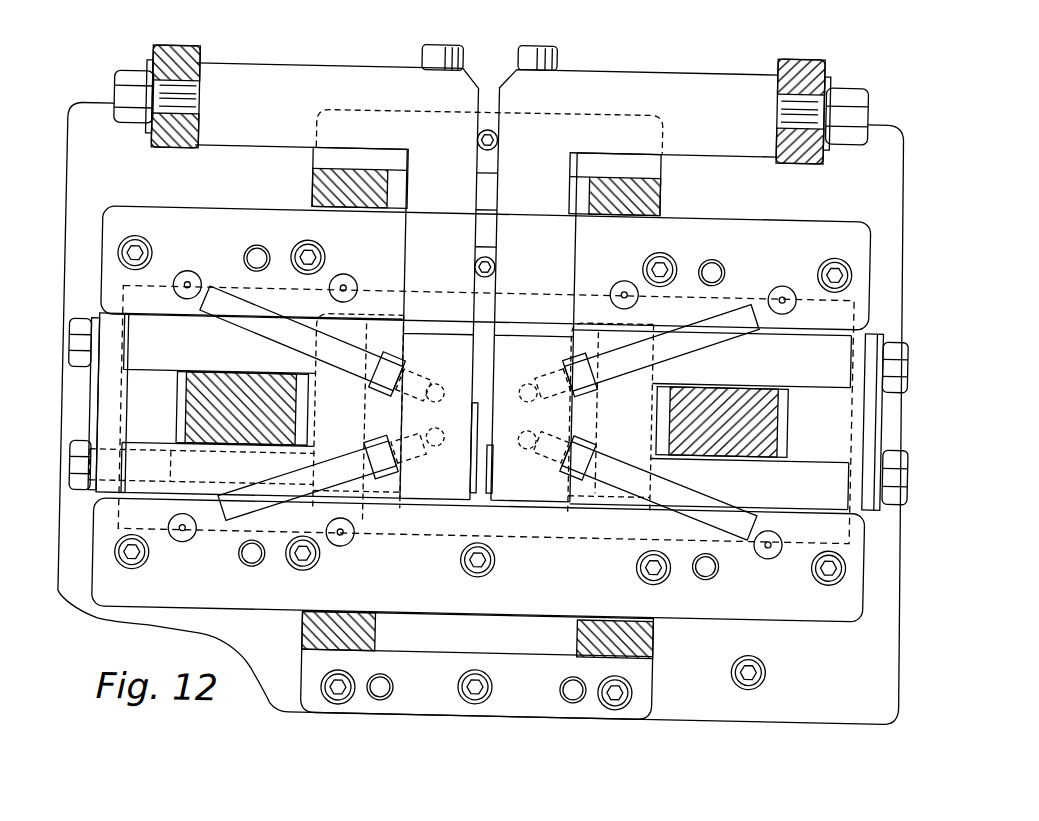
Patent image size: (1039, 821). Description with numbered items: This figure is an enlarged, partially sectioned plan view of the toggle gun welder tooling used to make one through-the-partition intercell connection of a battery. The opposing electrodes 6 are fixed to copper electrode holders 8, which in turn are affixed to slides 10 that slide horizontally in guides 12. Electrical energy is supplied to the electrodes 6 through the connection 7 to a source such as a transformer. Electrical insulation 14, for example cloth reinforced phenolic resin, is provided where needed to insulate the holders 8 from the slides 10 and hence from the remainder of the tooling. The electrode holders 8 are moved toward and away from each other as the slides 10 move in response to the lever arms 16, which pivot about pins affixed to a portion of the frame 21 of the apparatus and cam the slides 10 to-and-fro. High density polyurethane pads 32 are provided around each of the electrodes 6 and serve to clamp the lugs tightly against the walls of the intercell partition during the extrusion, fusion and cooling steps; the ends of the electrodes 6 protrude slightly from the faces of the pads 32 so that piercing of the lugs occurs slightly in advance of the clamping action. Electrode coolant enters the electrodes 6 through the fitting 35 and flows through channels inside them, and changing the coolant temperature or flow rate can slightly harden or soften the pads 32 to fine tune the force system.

The electrode 6 is at (472, 410).
The connection 7 is at (152, 52).
The electrode holder 8 is at (408, 258).
The slide 10 is at (135, 327).
The guide 12 is at (127, 214).
The electrical insulation 14 is at (400, 345).
The lever arm 16 is at (203, 394).
The frame 21 is at (878, 142).
The polyurethane pad 32 is at (484, 403).
The fitting 35 is at (384, 394).